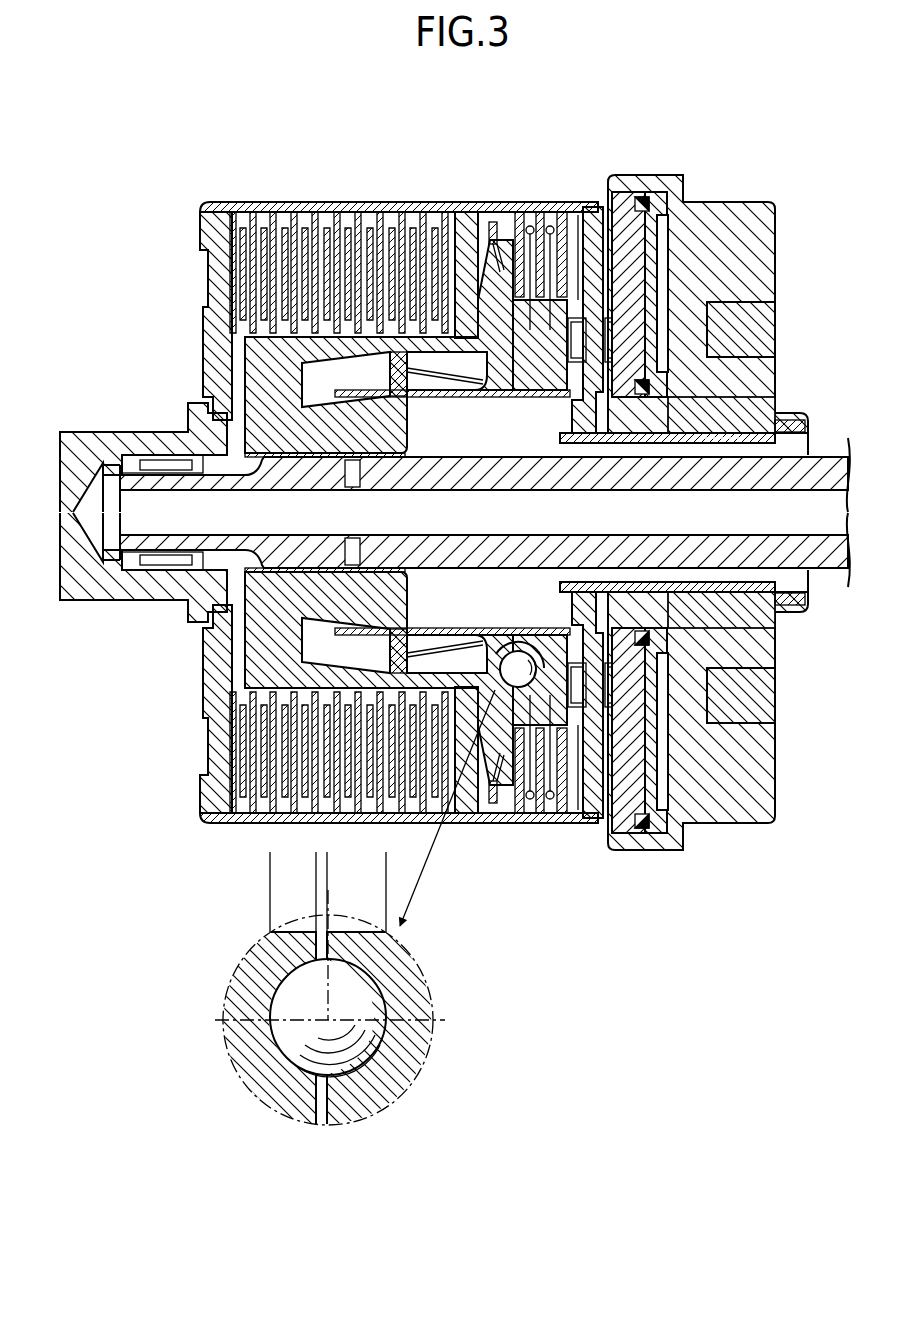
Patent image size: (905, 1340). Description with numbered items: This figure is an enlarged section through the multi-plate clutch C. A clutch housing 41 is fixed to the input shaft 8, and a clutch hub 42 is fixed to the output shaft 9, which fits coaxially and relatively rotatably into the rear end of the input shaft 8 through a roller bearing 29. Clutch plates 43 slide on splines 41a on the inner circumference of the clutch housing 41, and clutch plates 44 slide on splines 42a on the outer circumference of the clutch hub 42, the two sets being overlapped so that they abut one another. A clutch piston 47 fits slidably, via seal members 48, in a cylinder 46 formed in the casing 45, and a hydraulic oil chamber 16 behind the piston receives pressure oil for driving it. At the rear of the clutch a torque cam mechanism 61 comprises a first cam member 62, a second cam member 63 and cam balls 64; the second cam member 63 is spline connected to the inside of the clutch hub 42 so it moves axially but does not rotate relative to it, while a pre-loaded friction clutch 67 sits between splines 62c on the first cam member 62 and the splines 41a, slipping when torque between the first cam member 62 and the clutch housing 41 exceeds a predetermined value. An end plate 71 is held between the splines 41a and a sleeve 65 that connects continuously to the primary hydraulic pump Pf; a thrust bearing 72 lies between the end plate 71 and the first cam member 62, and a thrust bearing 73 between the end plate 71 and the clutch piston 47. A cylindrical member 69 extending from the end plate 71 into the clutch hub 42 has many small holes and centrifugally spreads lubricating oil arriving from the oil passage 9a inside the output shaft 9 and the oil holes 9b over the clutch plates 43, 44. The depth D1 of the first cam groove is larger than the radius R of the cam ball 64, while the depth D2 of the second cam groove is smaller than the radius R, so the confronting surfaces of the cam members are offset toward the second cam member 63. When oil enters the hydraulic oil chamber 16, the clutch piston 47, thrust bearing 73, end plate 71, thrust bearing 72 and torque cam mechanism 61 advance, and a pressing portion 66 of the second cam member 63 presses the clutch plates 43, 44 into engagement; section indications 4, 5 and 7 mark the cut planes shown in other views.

The input shaft 8 is at (97, 420).
The output shaft 9 is at (826, 446).
The oil passage 9a is at (472, 491).
The oil holes 9b is at (353, 488).
The hydraulic oil chamber 16 is at (665, 740).
The roller bearing 29 is at (155, 455).
The clutch housing 41 is at (196, 289).
The splines 41a is at (370, 218).
The clutch hub 42 is at (410, 436).
The splines 42a is at (352, 672).
The clutch plates 43 is at (300, 222).
The clutch plates 44 is at (394, 376).
The casing 45 is at (772, 200).
The cylinder 46 is at (648, 270).
The clutch piston 47 is at (662, 305).
The seal members 48 is at (652, 840).
The torque cam mechanism 61 is at (392, 1195).
The first cam member 62 is at (550, 645).
The splines 62c is at (580, 260).
The second cam member 63 is at (470, 650).
The cam balls 64 is at (512, 650).
The sleeve 65 is at (690, 446).
The pressing portion 66 is at (492, 230).
The friction clutch 67 is at (472, 838).
The cylindrical member 69 is at (500, 398).
The end plate 71 is at (598, 833).
The thrust bearing 72 is at (540, 350).
The thrust bearing 73 is at (718, 330).
The section line 4 is at (508, 193).
The section line 5 is at (510, 185).
The section line 7 is at (207, 1020).
The multi-plate clutch C is at (470, 150).
The primary hydraulic pump Pf is at (788, 366).
The depth of the first cam groove D1 is at (327, 868).
The depth of the second cam groove D2 is at (316, 868).
The radius of the cam ball R is at (328, 905).